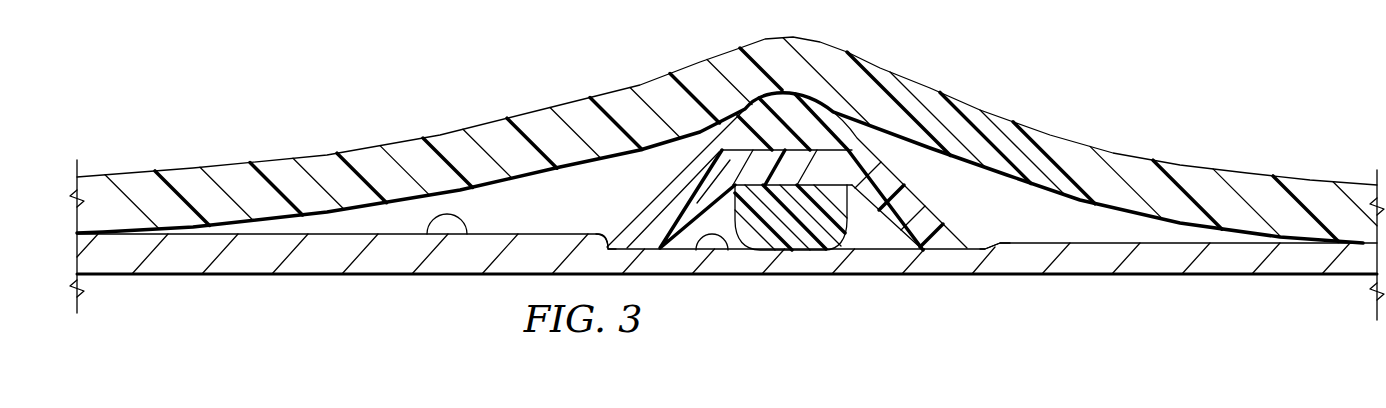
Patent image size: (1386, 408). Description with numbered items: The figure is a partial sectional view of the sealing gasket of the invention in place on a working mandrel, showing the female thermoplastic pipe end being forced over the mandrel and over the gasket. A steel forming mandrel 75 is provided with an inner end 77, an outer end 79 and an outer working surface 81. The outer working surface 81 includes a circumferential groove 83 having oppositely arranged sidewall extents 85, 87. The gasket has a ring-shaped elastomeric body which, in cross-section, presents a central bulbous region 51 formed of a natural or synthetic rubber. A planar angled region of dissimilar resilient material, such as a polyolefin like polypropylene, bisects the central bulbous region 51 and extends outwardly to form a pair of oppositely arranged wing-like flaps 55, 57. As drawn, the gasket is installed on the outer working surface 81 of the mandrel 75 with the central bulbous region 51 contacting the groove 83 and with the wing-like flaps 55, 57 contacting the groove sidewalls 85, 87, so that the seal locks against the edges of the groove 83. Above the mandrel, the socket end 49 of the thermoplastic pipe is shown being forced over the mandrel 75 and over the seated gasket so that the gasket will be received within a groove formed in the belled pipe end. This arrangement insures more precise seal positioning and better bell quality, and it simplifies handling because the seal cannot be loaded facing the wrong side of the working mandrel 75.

The socket end 49 is at (650, 82).
The central bulbous region 51 is at (802, 240).
The wing-like flap 55 is at (908, 196).
The wing-like flap 57 is at (668, 208).
The forming mandrel 75 is at (1145, 262).
The inner end 77 is at (1322, 262).
The outer end 79 is at (162, 262).
The outer working surface 81 is at (437, 248).
The circumferential groove 83 is at (715, 253).
The sidewall extent 85 is at (608, 242).
The sidewall extent 87 is at (998, 245).